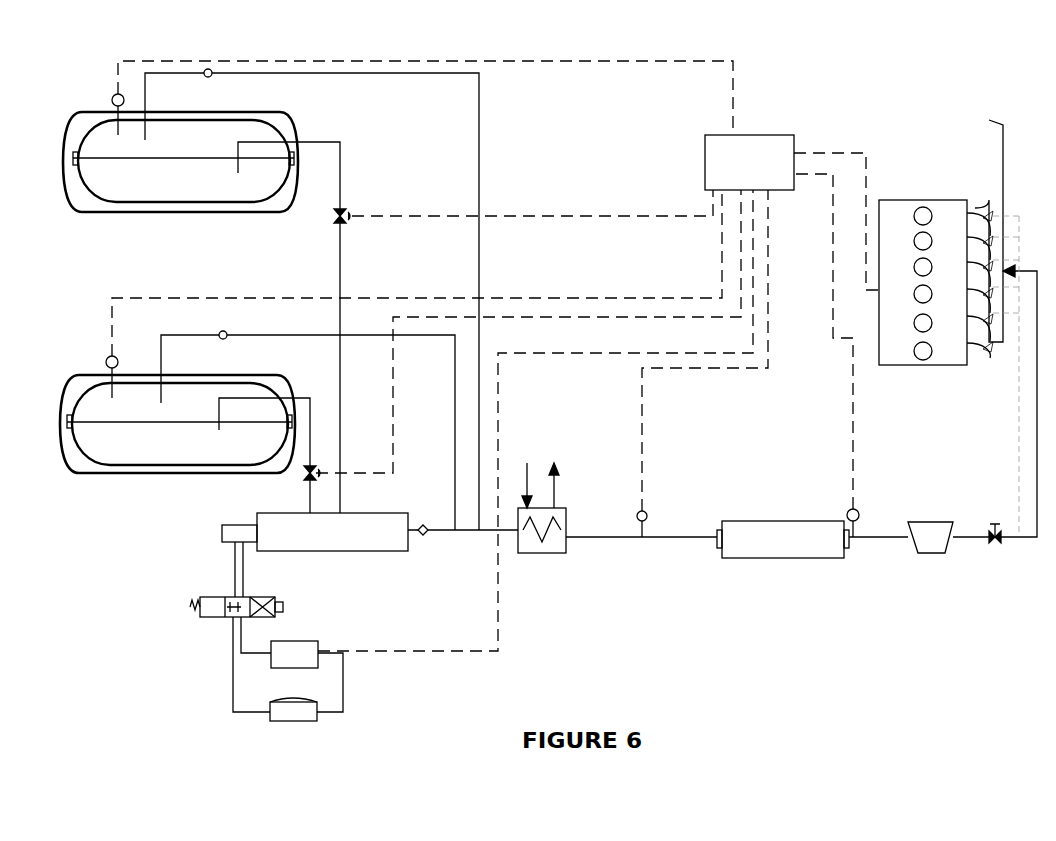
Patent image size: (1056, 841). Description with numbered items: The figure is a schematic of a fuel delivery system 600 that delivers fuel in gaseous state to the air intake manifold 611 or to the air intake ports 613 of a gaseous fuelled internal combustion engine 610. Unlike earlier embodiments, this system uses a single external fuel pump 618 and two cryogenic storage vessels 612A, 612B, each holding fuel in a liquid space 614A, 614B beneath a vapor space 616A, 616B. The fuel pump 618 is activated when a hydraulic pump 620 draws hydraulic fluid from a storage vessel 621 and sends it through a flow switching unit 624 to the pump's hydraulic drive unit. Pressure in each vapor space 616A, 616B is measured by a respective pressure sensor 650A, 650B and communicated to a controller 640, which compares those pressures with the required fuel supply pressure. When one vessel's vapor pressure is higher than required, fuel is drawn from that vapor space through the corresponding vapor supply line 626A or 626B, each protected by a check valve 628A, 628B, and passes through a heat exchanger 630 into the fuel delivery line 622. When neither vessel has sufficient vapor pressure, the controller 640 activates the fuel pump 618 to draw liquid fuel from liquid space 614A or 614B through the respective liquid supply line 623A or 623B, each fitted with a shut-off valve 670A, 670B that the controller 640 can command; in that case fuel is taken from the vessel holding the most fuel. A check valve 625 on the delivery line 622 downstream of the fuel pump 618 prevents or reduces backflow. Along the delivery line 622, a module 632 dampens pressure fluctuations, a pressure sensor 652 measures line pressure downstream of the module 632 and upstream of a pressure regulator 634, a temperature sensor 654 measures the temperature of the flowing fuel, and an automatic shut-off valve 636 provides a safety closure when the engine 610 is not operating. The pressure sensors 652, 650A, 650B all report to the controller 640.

The fuel delivery system 600 is at (745, 48).
The gaseous fuelled internal combustion engine 610 is at (922, 201).
The air intake manifold 611 is at (995, 158).
The cryogenic storage vessel 612A is at (77, 208).
The cryogenic storage vessel 612B is at (86, 475).
The air intake ports 613 is at (968, 352).
The liquid space 614A is at (183, 177).
The liquid space 614B is at (157, 447).
The vapor space 616A is at (176, 132).
The vapor space 616B is at (187, 395).
The fuel pump 618 is at (338, 545).
The hydraulic pump 620 is at (303, 641).
The storage vessel 621 is at (290, 717).
The fuel delivery line 622 is at (687, 538).
The liquid supply line 623A is at (343, 170).
The liquid supply line 623B is at (317, 378).
The flow switching unit 624 is at (222, 598).
The check valve 625 is at (424, 525).
The vapor supply line 626A is at (308, 72).
The vapor supply line 626B is at (178, 334).
The check valve 628A is at (208, 69).
The check valve 628B is at (228, 333).
The heat exchanger 630 is at (547, 555).
The module 632 is at (798, 550).
The pressure regulator 634 is at (932, 545).
The automatic shut-off valve 636 is at (993, 540).
The controller 640 is at (790, 135).
The pressure sensor 650A is at (112, 100).
The pressure sensor 650B is at (106, 362).
The pressure sensor 652 is at (858, 510).
The temperature sensor 654 is at (647, 514).
The shut-off valve 670A is at (346, 211).
The shut-off valve 670B is at (315, 468).